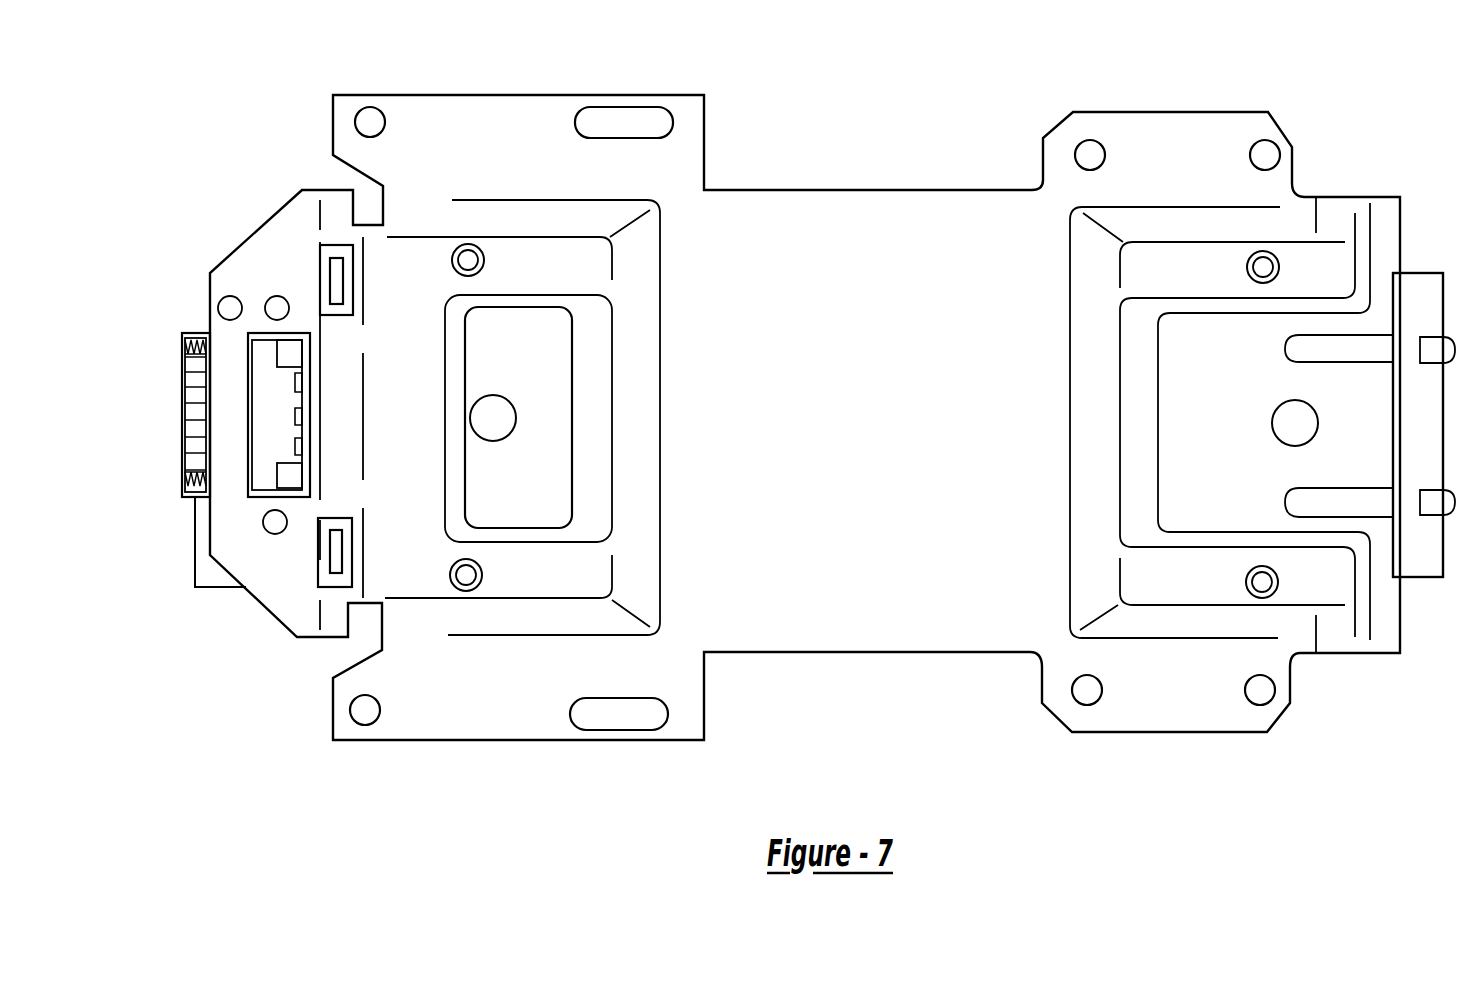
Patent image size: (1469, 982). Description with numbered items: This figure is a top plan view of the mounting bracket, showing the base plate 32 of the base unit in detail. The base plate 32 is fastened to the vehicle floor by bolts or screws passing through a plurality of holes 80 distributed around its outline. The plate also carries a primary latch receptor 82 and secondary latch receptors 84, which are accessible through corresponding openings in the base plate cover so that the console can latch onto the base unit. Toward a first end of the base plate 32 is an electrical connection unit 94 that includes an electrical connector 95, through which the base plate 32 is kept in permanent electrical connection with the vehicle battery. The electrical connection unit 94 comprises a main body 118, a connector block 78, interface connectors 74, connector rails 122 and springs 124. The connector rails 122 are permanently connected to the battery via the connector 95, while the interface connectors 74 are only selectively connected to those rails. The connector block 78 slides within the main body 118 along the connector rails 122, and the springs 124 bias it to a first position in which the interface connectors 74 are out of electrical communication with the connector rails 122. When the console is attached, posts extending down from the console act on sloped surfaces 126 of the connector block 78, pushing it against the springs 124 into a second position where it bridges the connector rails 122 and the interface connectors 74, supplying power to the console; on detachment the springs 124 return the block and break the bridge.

The base plate 32 is at (816, 652).
The interface connectors 74 is at (293, 385).
The connector block 78 is at (273, 368).
The holes 80 is at (570, 120).
The primary latch receptor 82 is at (1431, 270).
The secondary latch receptors 84 is at (340, 280).
The electrical connection unit 94 is at (188, 332).
The electrical connector 95 is at (187, 563).
The main body 118 is at (172, 455).
The connector rails 122 is at (198, 453).
The springs 124 is at (184, 352).
The sloped surfaces 126 is at (287, 358).